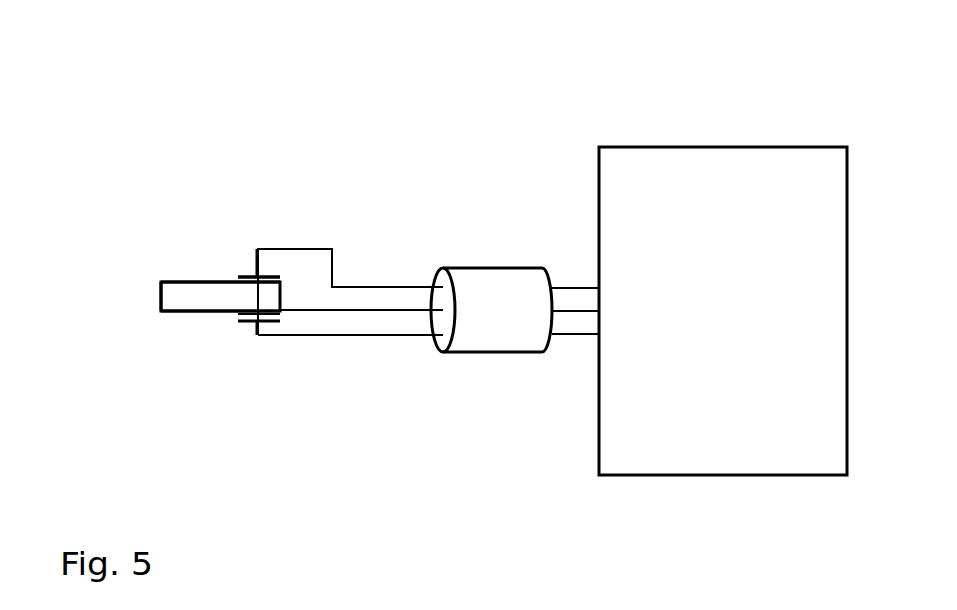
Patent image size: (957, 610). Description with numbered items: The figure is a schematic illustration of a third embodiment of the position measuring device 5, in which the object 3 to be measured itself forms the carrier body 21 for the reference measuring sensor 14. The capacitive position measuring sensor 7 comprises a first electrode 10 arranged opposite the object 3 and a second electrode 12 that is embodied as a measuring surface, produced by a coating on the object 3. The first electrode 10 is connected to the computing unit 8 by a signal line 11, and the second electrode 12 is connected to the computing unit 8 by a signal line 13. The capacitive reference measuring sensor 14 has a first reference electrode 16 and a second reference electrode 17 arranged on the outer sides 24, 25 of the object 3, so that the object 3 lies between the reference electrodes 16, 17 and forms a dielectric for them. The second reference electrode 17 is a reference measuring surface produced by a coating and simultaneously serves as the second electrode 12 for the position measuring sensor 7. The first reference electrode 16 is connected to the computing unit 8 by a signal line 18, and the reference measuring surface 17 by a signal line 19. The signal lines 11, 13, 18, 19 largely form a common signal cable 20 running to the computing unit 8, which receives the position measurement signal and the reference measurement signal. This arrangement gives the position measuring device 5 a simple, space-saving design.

The object to be measured 3 is at (168, 293).
The carrier body 21 is at (168, 293).
The outer side 25 is at (175, 312).
The outer side 24 is at (172, 281).
The capacitive reference measuring sensor 14 is at (230, 262).
The first reference electrode 16 is at (257, 277).
The capacitive position measuring sensor 7 is at (227, 333).
The second electrode 12 is at (238, 314).
The second reference electrode 17 is at (238, 314).
The first electrode 10 is at (257, 321).
The signal line 18 is at (355, 287).
The signal line 11 is at (356, 335).
The signal line 13 is at (398, 310).
The signal line 19 is at (398, 310).
The common signal cable 20 is at (471, 258).
The computing unit 8 is at (715, 136).
The position measuring device 5 is at (519, 153).